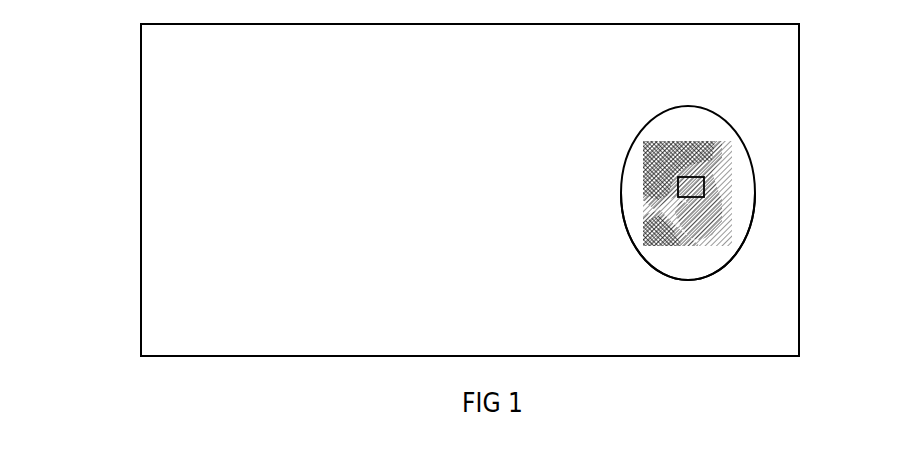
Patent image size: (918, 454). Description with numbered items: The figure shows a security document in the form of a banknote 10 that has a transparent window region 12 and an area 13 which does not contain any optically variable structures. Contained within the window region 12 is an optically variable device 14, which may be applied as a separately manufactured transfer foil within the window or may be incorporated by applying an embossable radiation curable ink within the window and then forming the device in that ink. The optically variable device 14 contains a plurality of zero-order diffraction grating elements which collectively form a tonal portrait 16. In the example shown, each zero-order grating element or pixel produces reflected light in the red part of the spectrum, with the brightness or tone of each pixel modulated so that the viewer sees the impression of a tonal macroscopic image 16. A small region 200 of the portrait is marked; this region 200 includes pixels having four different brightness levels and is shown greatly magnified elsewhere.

The banknote 10 is at (139, 108).
The transparent window region 12 is at (692, 108).
The area 13 is at (697, 262).
The optically variable device 14 is at (733, 163).
The tonal portrait 16 is at (708, 227).
The region 200 is at (678, 178).